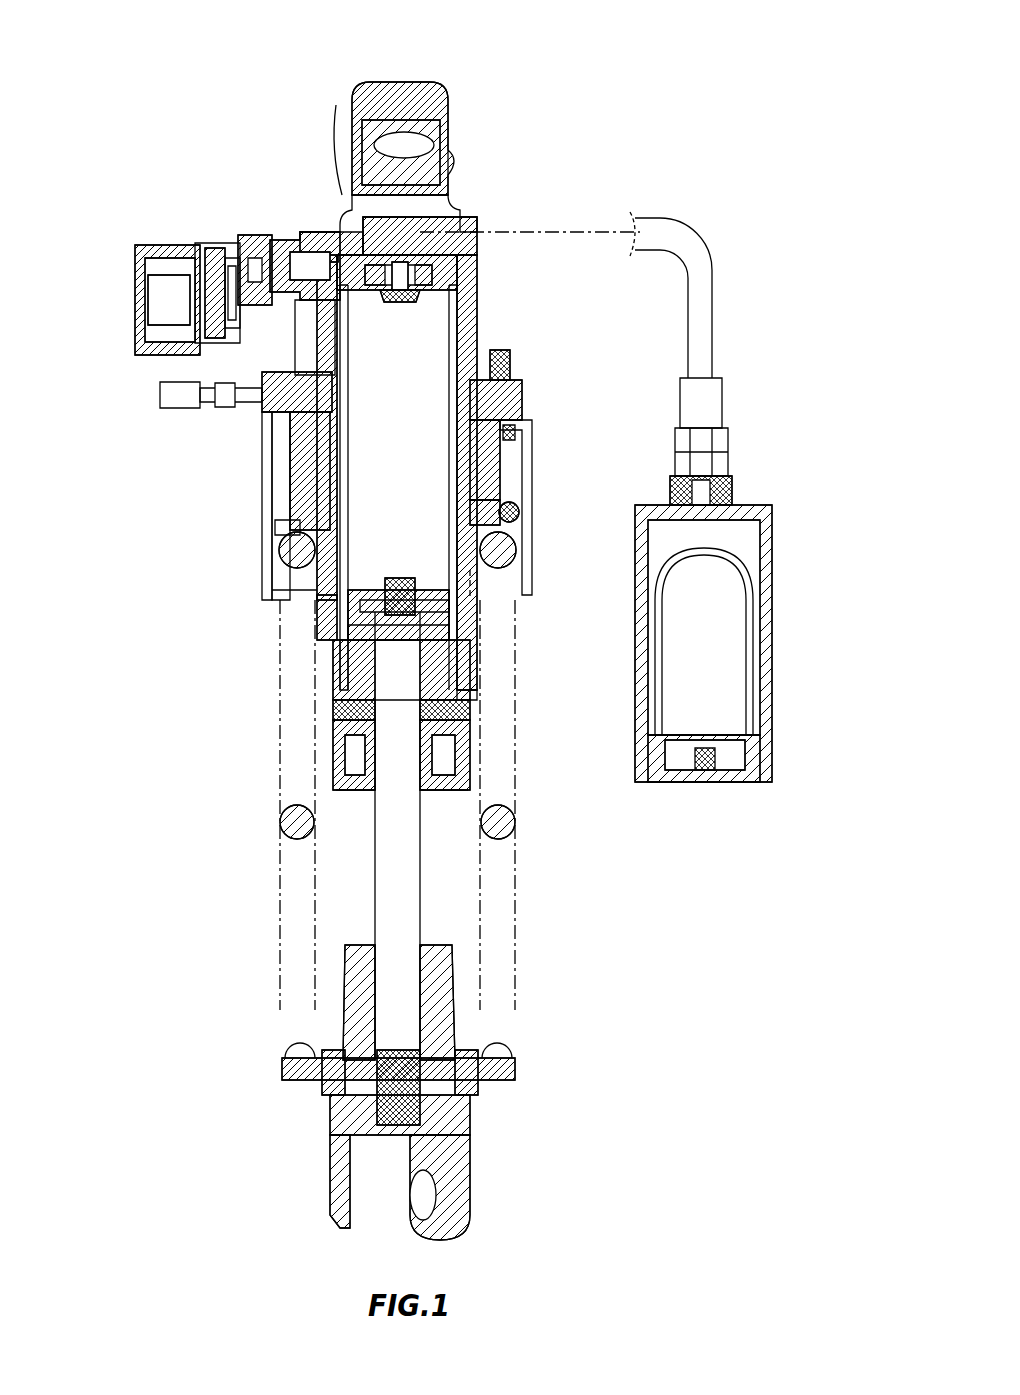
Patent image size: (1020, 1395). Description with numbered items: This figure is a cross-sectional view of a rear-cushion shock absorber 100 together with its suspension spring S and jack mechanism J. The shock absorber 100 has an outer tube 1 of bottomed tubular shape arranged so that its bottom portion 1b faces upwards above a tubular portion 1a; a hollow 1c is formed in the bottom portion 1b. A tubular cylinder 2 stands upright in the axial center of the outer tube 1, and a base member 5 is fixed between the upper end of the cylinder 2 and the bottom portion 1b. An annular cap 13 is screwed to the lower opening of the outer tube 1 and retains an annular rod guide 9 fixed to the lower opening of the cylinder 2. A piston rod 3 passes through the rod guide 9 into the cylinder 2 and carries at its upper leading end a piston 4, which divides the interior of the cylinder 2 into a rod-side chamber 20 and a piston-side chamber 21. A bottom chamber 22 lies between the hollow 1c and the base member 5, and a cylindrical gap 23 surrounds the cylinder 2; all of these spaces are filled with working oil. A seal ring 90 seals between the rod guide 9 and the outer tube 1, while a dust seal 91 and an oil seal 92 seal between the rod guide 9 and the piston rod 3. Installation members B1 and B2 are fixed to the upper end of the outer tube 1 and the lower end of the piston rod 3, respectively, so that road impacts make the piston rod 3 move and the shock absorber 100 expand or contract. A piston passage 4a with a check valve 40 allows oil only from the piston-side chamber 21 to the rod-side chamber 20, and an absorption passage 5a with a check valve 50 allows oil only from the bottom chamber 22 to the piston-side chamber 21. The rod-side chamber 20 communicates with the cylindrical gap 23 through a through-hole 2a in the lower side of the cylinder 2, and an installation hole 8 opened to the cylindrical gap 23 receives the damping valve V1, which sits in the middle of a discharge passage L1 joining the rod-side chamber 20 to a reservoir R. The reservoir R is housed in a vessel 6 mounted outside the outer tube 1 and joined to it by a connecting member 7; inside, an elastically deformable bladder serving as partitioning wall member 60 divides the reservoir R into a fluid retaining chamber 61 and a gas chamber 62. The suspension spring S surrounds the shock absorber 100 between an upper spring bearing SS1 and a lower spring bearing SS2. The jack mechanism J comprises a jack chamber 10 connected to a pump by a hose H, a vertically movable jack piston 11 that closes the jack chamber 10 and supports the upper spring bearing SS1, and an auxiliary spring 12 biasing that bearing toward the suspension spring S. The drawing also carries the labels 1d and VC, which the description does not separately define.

The shock absorber 100 is at (212, 150).
The installation member B1 is at (405, 85).
The installation member B2 is at (468, 1172).
The outer tube 1 is at (498, 337).
The tubular portion 1a is at (478, 690).
The bottom portion 1b is at (465, 190).
The hollow 1c is at (480, 213).
The valve housing portion 1d is at (292, 238).
The cylinder 2 is at (490, 358).
The through-hole 2a is at (340, 650).
The piston rod 3 is at (405, 905).
The piston 4 is at (368, 578).
The piston passage 4a is at (348, 630).
The base member 5 is at (427, 304).
The absorption passage 5a is at (375, 290).
The vessel 6 is at (782, 663).
The connecting member 7 is at (678, 225).
The installation hole 8 is at (265, 242).
The rod guide 9 is at (470, 725).
The jack chamber 10 is at (500, 420).
The jack piston 11 is at (500, 462).
The auxiliary spring 12 is at (515, 512).
The cap 13 is at (455, 792).
The rod-side chamber 20 is at (470, 658).
The piston-side chamber 21 is at (410, 449).
The bottom chamber 22 is at (338, 200).
The cylindrical gap 23 is at (318, 600).
The check valve 40 is at (450, 605).
The check valve 50 is at (458, 292).
The partitioning wall member 60 is at (745, 575).
The fluid retaining chamber 61 is at (665, 510).
The gas chamber 62 is at (720, 656).
The seal ring 90 is at (340, 705).
The dust seal 91 is at (355, 792).
The oil seal 92 is at (345, 720).
The hose H is at (162, 392).
The jack mechanism J is at (257, 446).
The discharge passage L1 is at (478, 585).
The reservoir R is at (768, 547).
The suspension spring S is at (280, 825).
The upper spring bearing SS1 is at (268, 525).
The lower spring bearing SS2 is at (298, 1085).
The damping valve V1 is at (195, 248).
The valve case VC is at (136, 300).